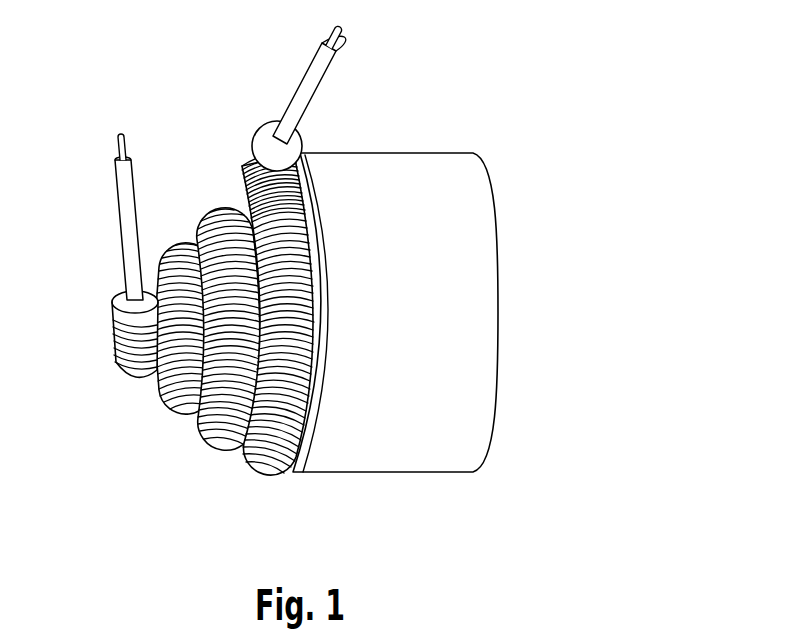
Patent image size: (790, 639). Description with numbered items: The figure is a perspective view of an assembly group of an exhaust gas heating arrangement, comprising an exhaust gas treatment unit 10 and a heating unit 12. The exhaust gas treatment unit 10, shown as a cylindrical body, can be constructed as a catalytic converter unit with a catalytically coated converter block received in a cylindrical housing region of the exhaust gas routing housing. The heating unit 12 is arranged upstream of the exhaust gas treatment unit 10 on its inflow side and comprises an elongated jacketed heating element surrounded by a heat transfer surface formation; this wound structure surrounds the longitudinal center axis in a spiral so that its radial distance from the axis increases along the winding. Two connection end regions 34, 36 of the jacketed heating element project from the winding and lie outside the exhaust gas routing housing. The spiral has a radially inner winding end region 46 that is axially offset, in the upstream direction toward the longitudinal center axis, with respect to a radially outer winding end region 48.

The exhaust gas treatment unit 10 is at (362, 453).
The heating unit 12 is at (203, 462).
The connection end region 34 is at (137, 177).
The connection end region 36 is at (300, 82).
The radially inner winding end region 46 is at (118, 363).
The radially outer winding end region 48 is at (303, 140).